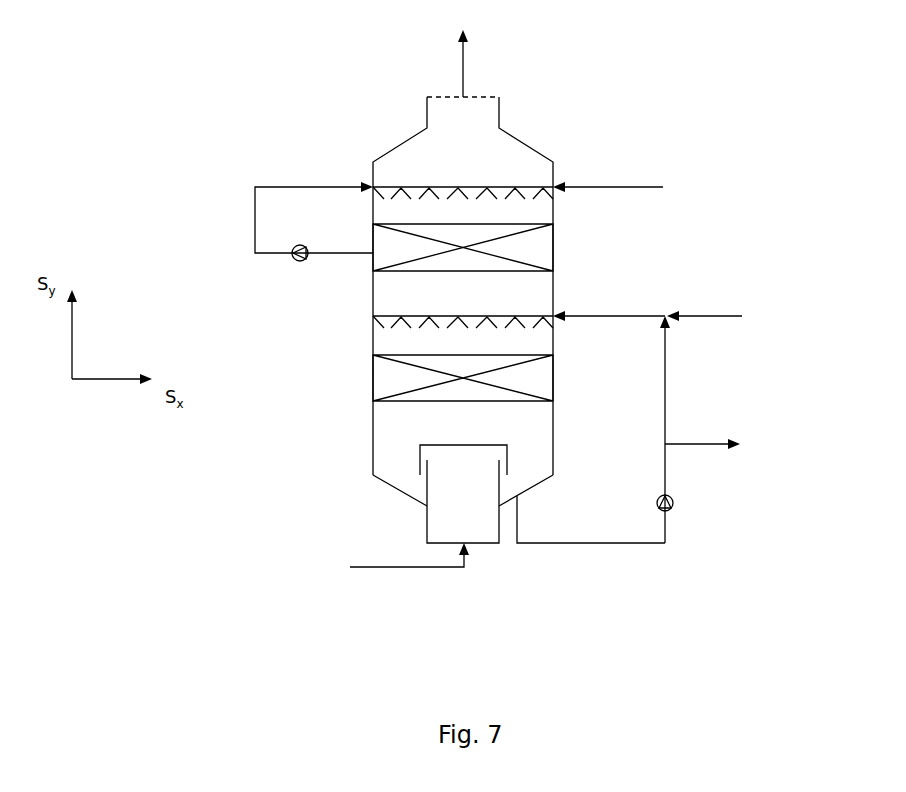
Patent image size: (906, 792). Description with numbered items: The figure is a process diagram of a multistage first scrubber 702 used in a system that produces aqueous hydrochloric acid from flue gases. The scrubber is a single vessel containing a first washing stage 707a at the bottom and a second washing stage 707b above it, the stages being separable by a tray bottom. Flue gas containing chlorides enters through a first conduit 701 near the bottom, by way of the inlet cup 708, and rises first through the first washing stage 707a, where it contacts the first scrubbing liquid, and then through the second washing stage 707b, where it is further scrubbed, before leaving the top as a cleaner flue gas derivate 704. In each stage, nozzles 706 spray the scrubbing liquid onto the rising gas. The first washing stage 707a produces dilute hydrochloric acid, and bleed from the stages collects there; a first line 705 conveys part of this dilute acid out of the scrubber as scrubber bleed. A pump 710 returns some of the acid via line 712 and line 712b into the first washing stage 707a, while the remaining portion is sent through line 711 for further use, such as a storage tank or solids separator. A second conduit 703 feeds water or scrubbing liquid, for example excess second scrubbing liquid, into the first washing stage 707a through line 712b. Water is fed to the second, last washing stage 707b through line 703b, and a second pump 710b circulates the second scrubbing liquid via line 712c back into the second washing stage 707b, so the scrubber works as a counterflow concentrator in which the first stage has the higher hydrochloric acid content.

The first conduit 701 is at (410, 570).
The first scrubber 702 is at (373, 295).
The second conduit 703 is at (705, 316).
The line 703b is at (605, 187).
The flue gas derivate 704 is at (463, 82).
The first line 705 is at (555, 543).
The nozzles 706 is at (538, 192).
The first washing stage 707a is at (385, 372).
The second washing stage 707b is at (538, 248).
The bottom gas inlet cup 708 is at (425, 515).
The pump 710 is at (675, 503).
The second pump 710b is at (290, 262).
The line 711 is at (688, 444).
The line 712 is at (665, 357).
The line 712b is at (600, 316).
The line 712c is at (295, 187).